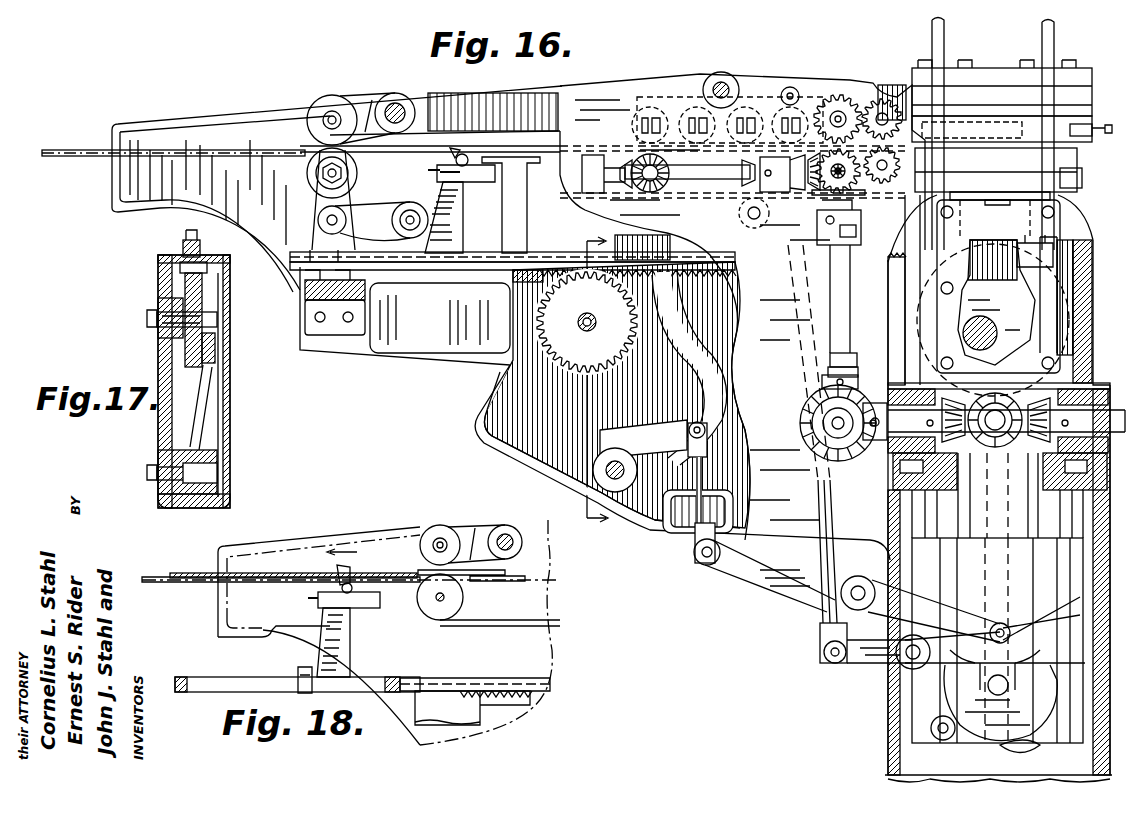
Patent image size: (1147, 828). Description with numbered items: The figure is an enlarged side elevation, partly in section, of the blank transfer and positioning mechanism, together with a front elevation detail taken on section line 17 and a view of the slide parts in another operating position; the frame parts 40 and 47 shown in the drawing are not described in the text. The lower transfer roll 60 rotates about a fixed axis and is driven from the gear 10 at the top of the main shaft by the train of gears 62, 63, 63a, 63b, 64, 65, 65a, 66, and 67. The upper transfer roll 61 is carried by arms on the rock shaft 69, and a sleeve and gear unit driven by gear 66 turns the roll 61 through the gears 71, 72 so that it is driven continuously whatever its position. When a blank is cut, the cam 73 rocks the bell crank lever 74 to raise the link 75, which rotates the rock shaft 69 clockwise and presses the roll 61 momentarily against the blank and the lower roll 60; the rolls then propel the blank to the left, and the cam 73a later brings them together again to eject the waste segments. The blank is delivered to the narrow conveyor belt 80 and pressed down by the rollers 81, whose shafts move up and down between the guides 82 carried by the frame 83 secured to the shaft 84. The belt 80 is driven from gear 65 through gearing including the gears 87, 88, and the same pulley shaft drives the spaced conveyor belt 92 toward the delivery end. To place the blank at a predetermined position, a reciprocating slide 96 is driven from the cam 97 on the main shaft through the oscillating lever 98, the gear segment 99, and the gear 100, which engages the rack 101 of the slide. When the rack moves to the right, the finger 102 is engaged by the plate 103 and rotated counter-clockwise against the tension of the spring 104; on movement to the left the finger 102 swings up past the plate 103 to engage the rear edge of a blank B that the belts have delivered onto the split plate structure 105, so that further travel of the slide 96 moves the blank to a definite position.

In FIG. 16, the split plate structure 105 is at (255, 160).
In FIG. 16, the conveyor belt 92 is at (385, 152).
In FIG. 18, the conveyor belt 92 is at (540, 578).
In FIG. 16, the finger 102 is at (460, 158).
In FIG. 18, the finger 102 is at (352, 578).
In FIG. 16, the plate 103 is at (490, 152).
In FIG. 18, the plate 103 is at (492, 585).
In FIG. 16, the spring 104 is at (497, 178).
In FIG. 18, the spring 104 is at (380, 600).
In FIG. 16, the rack 101 is at (575, 262).
In FIG. 18, the rack 101 is at (548, 688).
In FIG. 16, the section line 17 is at (610, 380).
In FIG. 16, the gear 100 is at (637, 300).
In FIG. 17, the gear 100 is at (200, 290).
In FIG. 16, the gear segment 99 is at (485, 430).
In FIG. 17, the gear segment 99 is at (220, 350).
In FIG. 16, the reciprocating slide 96 is at (905, 290).
In FIG. 17, the reciprocating slide 96 is at (180, 252).
In FIG. 18, the reciprocating slide 96 is at (232, 683).
In FIG. 16, the rollers 81 is at (650, 115).
In FIG. 16, the frame 83 is at (680, 95).
In FIG. 16, the shaft 84 is at (722, 90).
In FIG. 16, the gear 65a is at (822, 105).
In FIG. 16, the rock shaft 69 is at (840, 110).
In FIG. 16, the gear 71 is at (838, 95).
In FIG. 16, the gear 72 is at (893, 100).
In FIG. 16, the gear 66 is at (852, 195).
In FIG. 16, the gear 65 is at (815, 195).
In FIG. 16, the gear 67 is at (872, 226).
In FIG. 16, the gear 88 is at (630, 160).
In FIG. 16, the guides 82 is at (640, 158).
In FIG. 16, the gear 87 is at (655, 195).
In FIG. 16, the narrow conveyor belt 80 is at (720, 195).
In FIG. 16, the gear 63 is at (850, 318).
In FIG. 16, the gear 64 is at (822, 385).
In FIG. 16, the gear 63a is at (810, 440).
In FIG. 16, the gear 63b is at (812, 425).
In FIG. 16, the oscillating lever 98 is at (745, 580).
In FIG. 16, the link 75 is at (808, 618).
In FIG. 16, the bell crank lever 74 is at (852, 668).
In FIG. 16, the post 40 is at (947, 25).
In FIG. 16, the upper transfer roll 61 is at (925, 134).
In FIG. 16, the lower transfer roll 60 is at (938, 170).
In FIG. 16, the cam bracket 47 is at (1050, 300).
In FIG. 16, the gear 10 is at (1000, 450).
In FIG. 16, the gear 62 is at (940, 465).
In FIG. 16, the cam 97 is at (1060, 565).
In FIG. 16, the cam 73 is at (985, 745).
In FIG. 16, the cam 73a is at (1020, 752).
In FIG. 18, the blank B is at (275, 548).